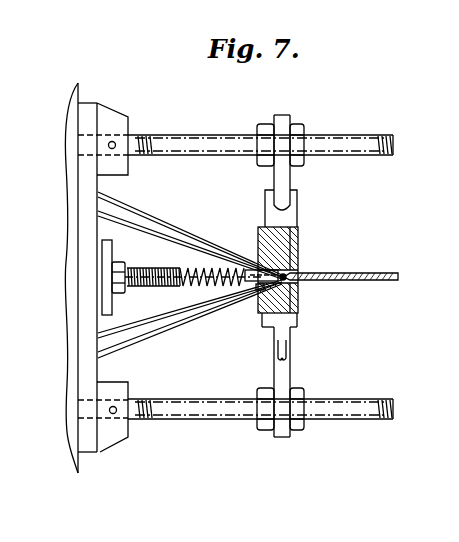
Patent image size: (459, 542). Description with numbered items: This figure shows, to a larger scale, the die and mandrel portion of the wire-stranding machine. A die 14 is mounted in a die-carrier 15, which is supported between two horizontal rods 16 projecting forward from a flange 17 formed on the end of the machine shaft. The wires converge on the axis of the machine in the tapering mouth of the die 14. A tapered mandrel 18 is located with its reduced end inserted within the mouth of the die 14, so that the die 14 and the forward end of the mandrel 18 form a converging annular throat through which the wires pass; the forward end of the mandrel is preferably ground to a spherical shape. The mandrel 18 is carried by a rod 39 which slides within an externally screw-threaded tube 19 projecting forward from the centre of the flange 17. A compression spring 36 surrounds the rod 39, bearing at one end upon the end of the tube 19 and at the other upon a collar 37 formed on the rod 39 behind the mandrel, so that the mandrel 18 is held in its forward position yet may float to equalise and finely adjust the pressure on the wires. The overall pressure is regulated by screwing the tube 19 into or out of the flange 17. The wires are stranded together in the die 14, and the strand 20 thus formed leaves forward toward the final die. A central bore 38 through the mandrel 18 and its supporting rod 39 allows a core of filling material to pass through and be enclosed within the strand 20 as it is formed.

The die 14 is at (298, 245).
The die-carrier 15 is at (296, 195).
The horizontal rods 16 is at (212, 140).
The flange 17 is at (90, 176).
The tapered mandrel 18 is at (258, 285).
The externally screw-threaded tube 19 is at (151, 288).
The strand 20 is at (378, 273).
The compression spring 36 is at (183, 268).
The collar 37 is at (232, 270).
The central bore 38 is at (257, 290).
The rod 39 is at (197, 268).